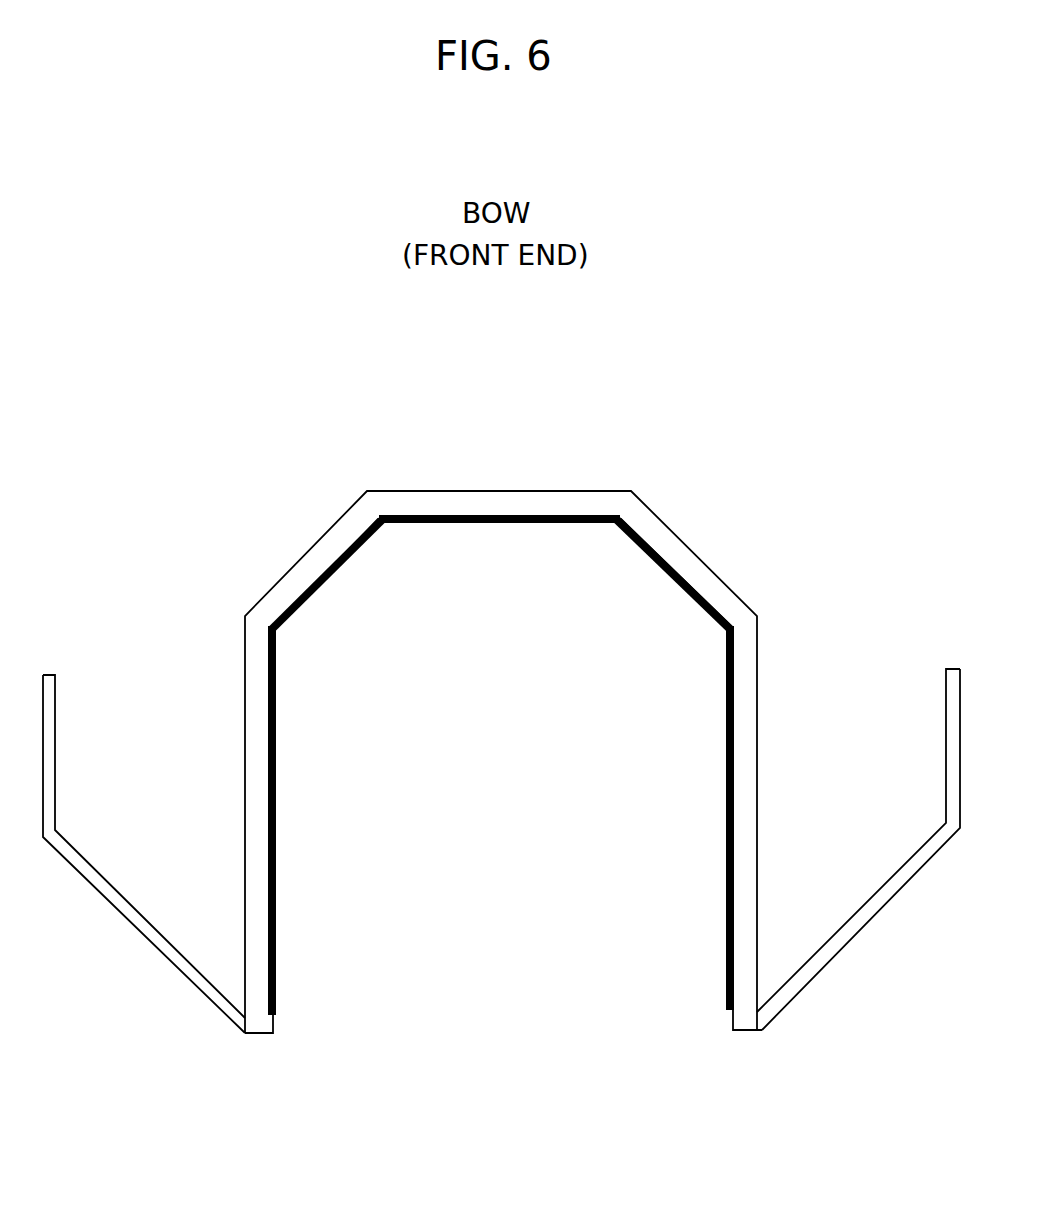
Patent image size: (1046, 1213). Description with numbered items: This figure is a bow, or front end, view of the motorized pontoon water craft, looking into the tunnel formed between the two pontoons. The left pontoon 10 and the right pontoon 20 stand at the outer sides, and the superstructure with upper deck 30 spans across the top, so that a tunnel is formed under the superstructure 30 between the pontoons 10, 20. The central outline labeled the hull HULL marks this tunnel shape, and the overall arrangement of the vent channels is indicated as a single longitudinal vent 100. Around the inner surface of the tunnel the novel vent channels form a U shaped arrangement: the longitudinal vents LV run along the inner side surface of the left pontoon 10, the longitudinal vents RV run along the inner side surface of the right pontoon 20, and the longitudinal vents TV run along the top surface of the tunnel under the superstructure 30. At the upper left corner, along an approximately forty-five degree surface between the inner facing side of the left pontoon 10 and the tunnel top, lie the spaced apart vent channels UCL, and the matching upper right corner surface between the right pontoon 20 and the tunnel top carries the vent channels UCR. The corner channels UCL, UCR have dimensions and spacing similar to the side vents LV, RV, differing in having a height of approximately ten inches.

The single longitudinal vent 100 is at (501, 625).
The main hull HULL is at (557, 716).
The superstructure with upper deck 30 is at (495, 465).
The left pontoon 10 is at (173, 913).
The right pontoon 20 is at (822, 907).
The longitudinal vents along top surface of the tunnel under the superstructure TV is at (498, 524).
The longitudinal vent channels at upper left corner UCL is at (331, 577).
The longitudinal vent channels at upper right corner UCR is at (671, 574).
The longitudinal vents along inner side surface of the left pontoon LV is at (284, 958).
The longitudinal vents along inner side surface of the right pontoon RV is at (721, 953).